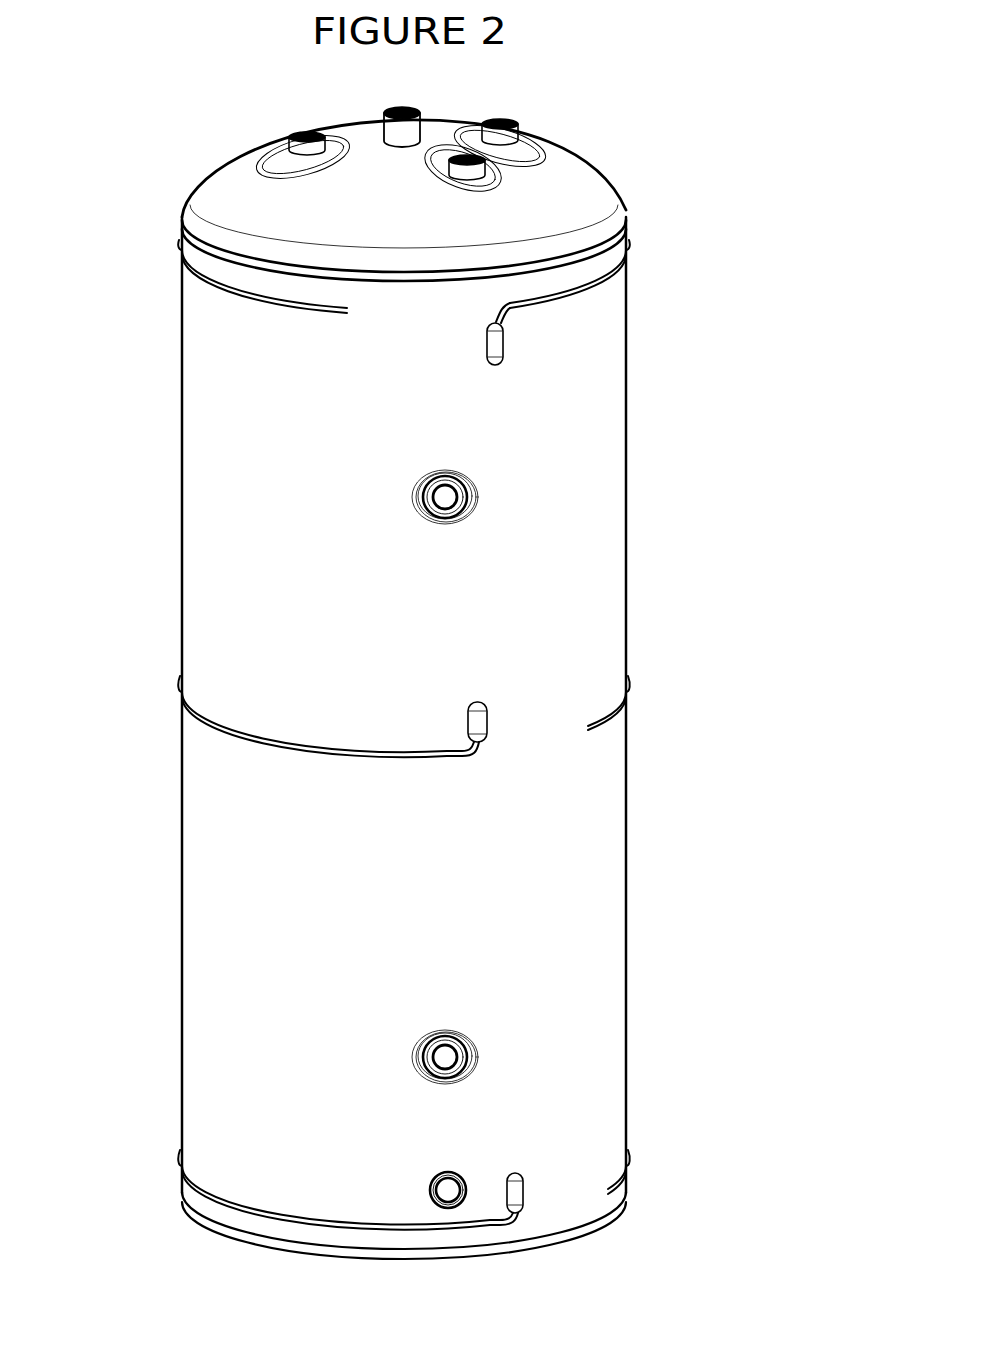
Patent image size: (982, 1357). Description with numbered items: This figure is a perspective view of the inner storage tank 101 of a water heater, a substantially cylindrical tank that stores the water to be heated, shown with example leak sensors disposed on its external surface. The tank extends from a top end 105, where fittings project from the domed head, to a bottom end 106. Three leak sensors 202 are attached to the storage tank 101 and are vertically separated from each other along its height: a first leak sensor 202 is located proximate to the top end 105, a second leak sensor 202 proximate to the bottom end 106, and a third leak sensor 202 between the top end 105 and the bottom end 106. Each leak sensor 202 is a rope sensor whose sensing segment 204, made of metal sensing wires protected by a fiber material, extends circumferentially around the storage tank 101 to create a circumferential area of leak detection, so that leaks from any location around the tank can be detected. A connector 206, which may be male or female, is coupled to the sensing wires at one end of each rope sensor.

The inner storage tank 101 is at (255, 975).
The top end 105 is at (207, 192).
The bottom end 106 is at (597, 1228).
The leak sensor 202 is at (527, 385).
The sensing segment 204 is at (598, 291).
The connector 206 is at (503, 360).